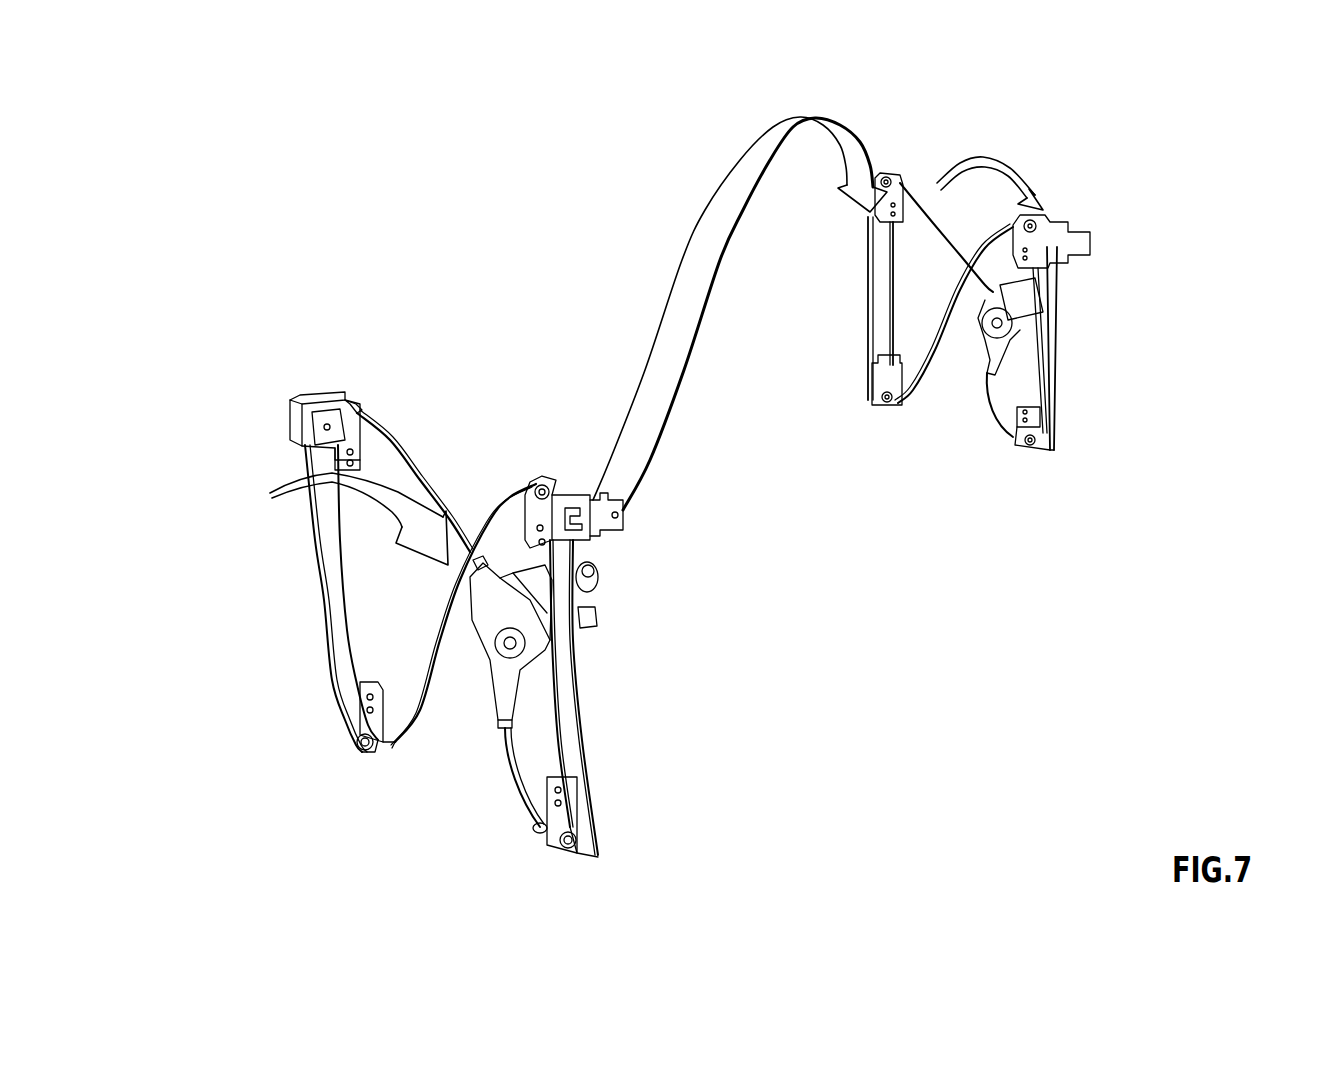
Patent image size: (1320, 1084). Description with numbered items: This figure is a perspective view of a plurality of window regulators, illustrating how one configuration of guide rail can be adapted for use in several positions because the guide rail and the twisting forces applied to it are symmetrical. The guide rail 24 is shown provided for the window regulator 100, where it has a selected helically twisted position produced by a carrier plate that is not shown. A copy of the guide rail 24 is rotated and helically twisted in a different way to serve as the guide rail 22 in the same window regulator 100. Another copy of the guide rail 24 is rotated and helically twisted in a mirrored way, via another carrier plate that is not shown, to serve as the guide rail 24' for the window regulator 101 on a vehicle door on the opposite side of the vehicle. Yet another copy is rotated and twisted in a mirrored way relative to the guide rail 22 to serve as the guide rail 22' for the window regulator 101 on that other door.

The guide rail 24 is at (304, 572).
The guide rail 22 is at (577, 666).
The guide rail 24' is at (836, 289).
The guide rail 22' is at (1072, 332).
The window regulator 100 is at (299, 688).
The window regulator 101 is at (958, 397).